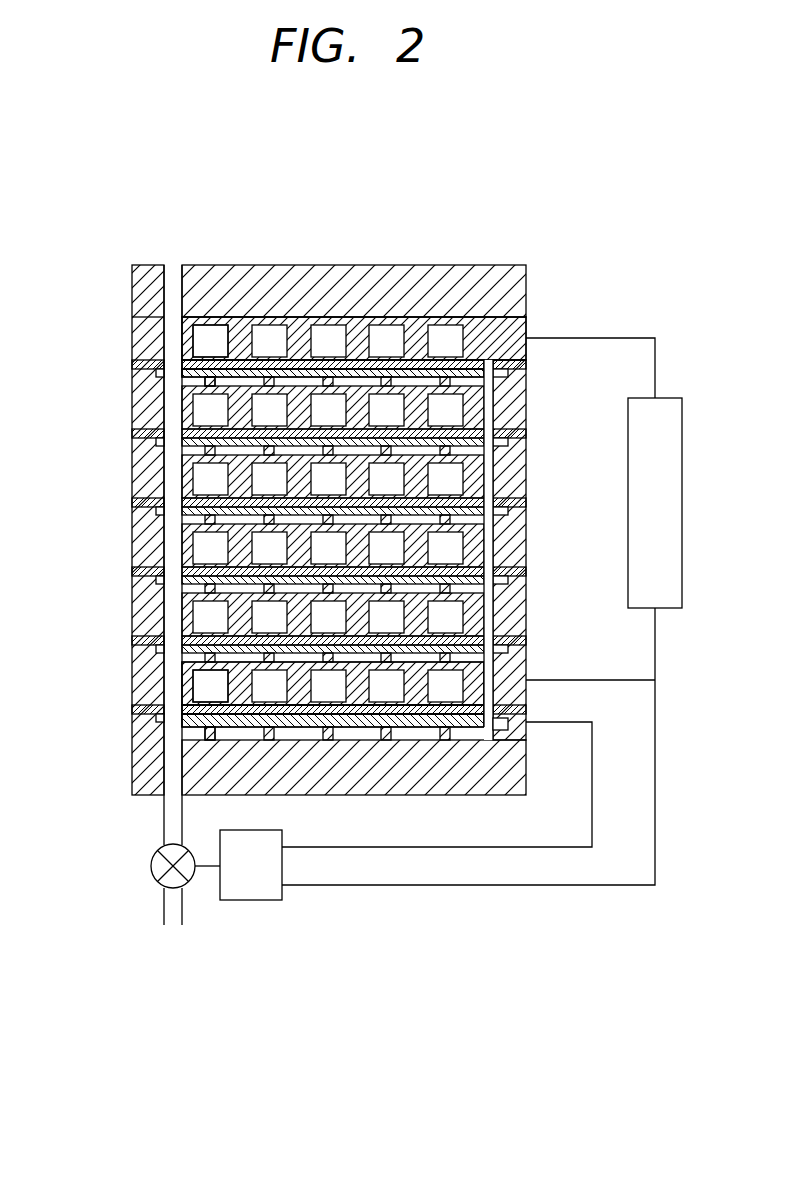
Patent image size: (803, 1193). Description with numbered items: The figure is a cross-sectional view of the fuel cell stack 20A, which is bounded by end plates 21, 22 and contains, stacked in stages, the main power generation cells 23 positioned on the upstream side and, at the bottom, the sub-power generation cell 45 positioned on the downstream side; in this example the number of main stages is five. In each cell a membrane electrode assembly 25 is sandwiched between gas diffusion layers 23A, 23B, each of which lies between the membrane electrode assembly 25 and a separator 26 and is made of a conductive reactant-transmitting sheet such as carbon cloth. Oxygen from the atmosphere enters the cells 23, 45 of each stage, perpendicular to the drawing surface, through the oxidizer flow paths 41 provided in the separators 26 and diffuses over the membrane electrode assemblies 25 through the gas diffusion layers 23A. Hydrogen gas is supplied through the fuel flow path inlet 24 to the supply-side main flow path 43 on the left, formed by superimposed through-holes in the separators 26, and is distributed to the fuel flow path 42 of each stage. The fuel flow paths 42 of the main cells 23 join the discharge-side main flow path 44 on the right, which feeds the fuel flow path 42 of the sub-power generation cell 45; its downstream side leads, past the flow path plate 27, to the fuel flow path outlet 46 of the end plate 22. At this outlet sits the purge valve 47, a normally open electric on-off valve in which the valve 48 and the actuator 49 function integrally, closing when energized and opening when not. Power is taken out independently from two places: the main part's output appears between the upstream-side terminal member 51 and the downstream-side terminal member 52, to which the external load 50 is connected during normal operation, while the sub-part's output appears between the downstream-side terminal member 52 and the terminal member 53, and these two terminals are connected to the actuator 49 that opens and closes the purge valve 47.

The fuel cell stack 20A is at (445, 218).
The end plate 21 is at (520, 286).
The end plate 22 is at (405, 790).
The main power generation cell 23 is at (53, 305).
The gas diffusion layer 23A is at (188, 352).
The gas diffusion layer 23B is at (198, 380).
The fuel flow path inlet 24 is at (172, 270).
The membrane electrode assembly 25 is at (140, 362).
The separator member 26 is at (505, 398).
The flow path plate 27 is at (505, 724).
The atmospheric communication space 41 is at (205, 342).
The fuel supply space 42 is at (195, 400).
The supply-side main flow path 43 is at (168, 540).
The discharge-side main flow path 44 is at (515, 537).
The sub-power generation cell 45 is at (53, 653).
The fuel flow path outlet 46 is at (173, 789).
The purge valve 47 is at (239, 928).
The valve 48 is at (197, 877).
The actuator 49 is at (247, 902).
The external load 50 is at (682, 432).
The upstream-side terminal member 51 is at (601, 336).
The downstream-side terminal member 52 is at (590, 680).
The terminal member of the sub-power generation part 53 is at (502, 848).